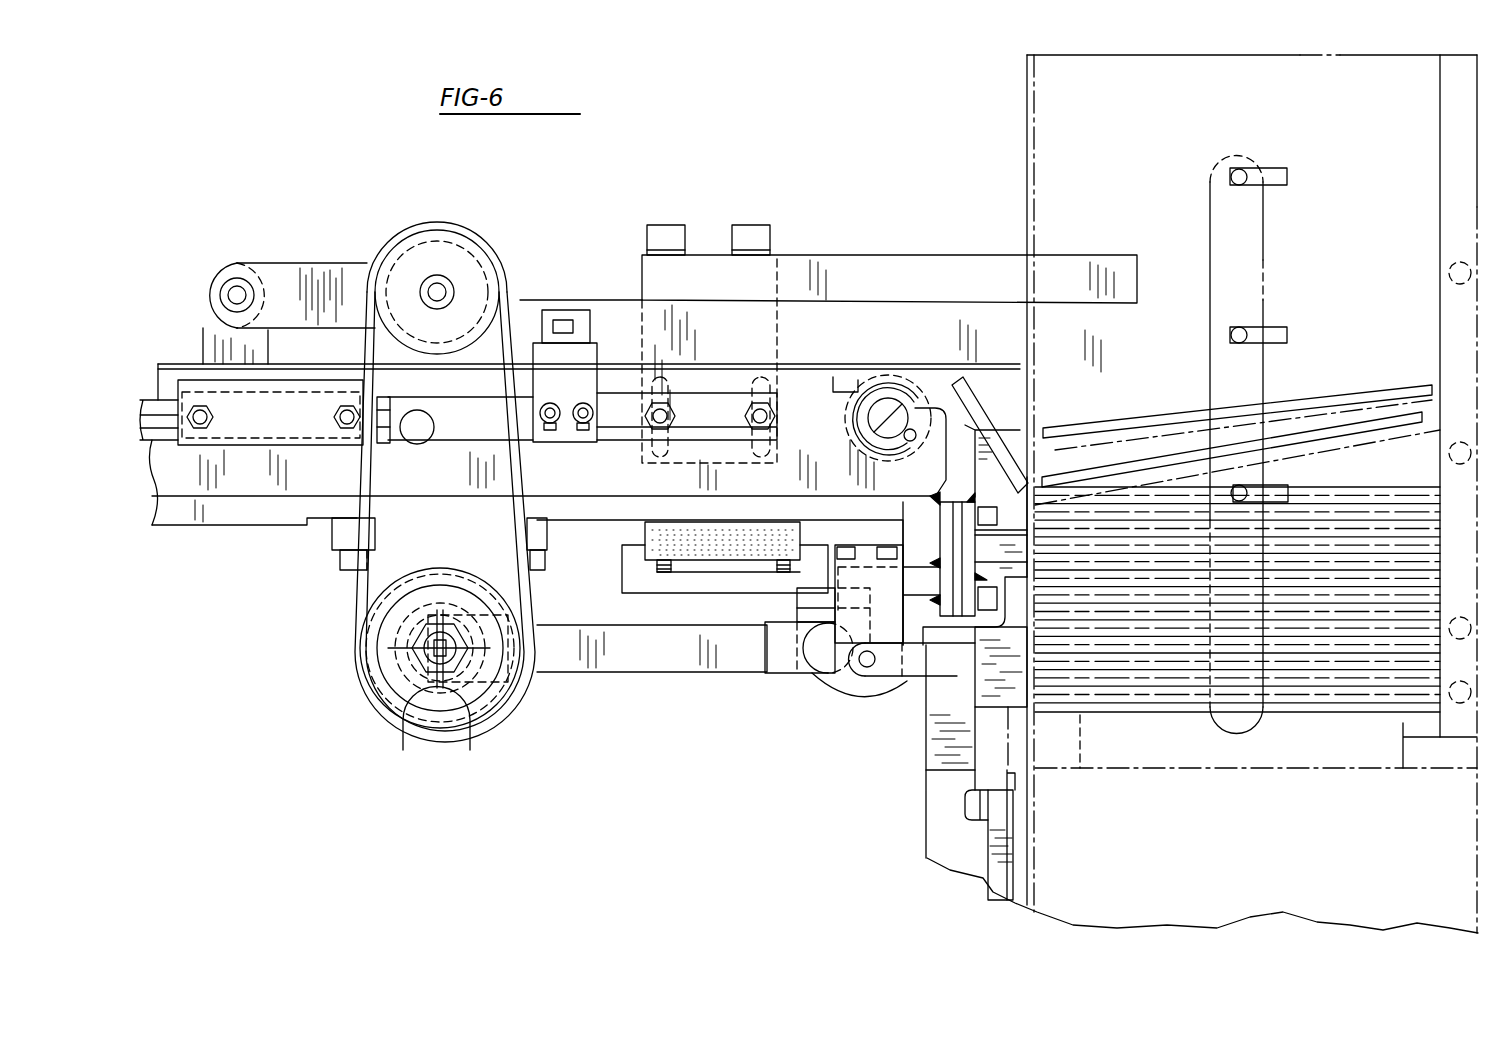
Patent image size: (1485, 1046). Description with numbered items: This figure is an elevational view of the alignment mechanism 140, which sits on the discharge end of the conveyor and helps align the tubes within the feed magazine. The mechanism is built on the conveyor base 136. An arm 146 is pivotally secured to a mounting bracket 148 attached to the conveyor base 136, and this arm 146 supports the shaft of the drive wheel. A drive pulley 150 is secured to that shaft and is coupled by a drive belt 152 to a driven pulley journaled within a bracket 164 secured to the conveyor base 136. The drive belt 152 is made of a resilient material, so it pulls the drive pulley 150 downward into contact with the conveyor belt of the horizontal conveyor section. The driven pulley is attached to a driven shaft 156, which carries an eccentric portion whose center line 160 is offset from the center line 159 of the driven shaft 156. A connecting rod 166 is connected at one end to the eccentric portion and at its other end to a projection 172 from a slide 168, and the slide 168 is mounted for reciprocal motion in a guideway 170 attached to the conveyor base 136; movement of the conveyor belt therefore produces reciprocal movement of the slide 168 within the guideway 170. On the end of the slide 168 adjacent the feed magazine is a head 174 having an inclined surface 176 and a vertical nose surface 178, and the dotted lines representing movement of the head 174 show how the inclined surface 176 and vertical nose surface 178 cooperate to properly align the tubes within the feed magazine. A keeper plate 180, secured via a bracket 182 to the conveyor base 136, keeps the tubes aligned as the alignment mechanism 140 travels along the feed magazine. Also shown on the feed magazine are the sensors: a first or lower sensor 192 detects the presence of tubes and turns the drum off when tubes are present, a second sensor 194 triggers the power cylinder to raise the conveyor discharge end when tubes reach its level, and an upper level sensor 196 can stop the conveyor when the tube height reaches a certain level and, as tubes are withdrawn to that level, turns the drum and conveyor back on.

The conveyor base 136 is at (180, 515).
The alignment mechanism 140 is at (1077, 113).
The arm 146 is at (305, 272).
The mounting bracket 148 is at (213, 338).
The drive pulley 150 is at (487, 252).
The drive belt 152 is at (352, 574).
The driven shaft 156 is at (375, 690).
The center line of the driven shaft 159 is at (470, 750).
The center line of the eccentric portion 160 is at (403, 750).
The bracket 164 is at (335, 530).
The connecting rod 166 is at (573, 655).
The slide 168 is at (720, 588).
The guideway 170 is at (648, 526).
The projection 172 is at (820, 678).
The head 174 is at (1024, 500).
The inclined surface 176 is at (997, 467).
The vertical nose surface 178 is at (1035, 503).
The keeper plate 180 is at (1030, 848).
The bracket 182 is at (990, 687).
The first or lower sensor 192 is at (1282, 485).
The second sensor 194 is at (1288, 330).
The upper level sensor 196 is at (1285, 172).